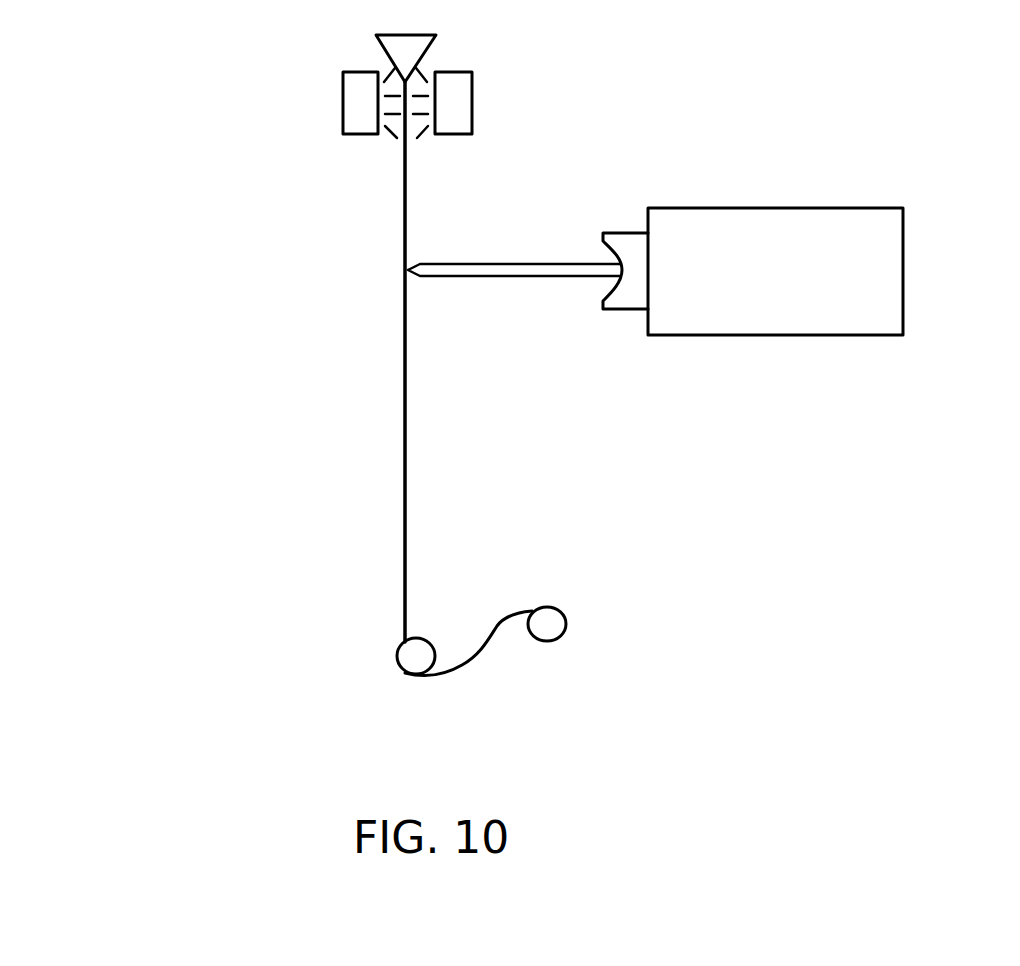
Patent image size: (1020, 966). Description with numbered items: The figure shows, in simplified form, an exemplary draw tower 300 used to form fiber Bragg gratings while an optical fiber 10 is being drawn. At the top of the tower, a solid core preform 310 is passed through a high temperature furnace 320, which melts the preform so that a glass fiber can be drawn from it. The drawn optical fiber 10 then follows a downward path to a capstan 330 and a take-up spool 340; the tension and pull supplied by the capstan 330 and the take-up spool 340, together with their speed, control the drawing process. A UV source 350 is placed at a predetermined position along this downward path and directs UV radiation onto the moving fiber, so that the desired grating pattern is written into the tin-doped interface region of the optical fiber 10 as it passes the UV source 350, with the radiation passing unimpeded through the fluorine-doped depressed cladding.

The draw tower 300 is at (242, 497).
The solid core preform 310 is at (397, 60).
The high temperature furnace 320 is at (475, 100).
The optical fiber 10 is at (405, 151).
The UV source 350 is at (802, 337).
The capstan 330 is at (380, 656).
The take-up spool 340 is at (567, 602).